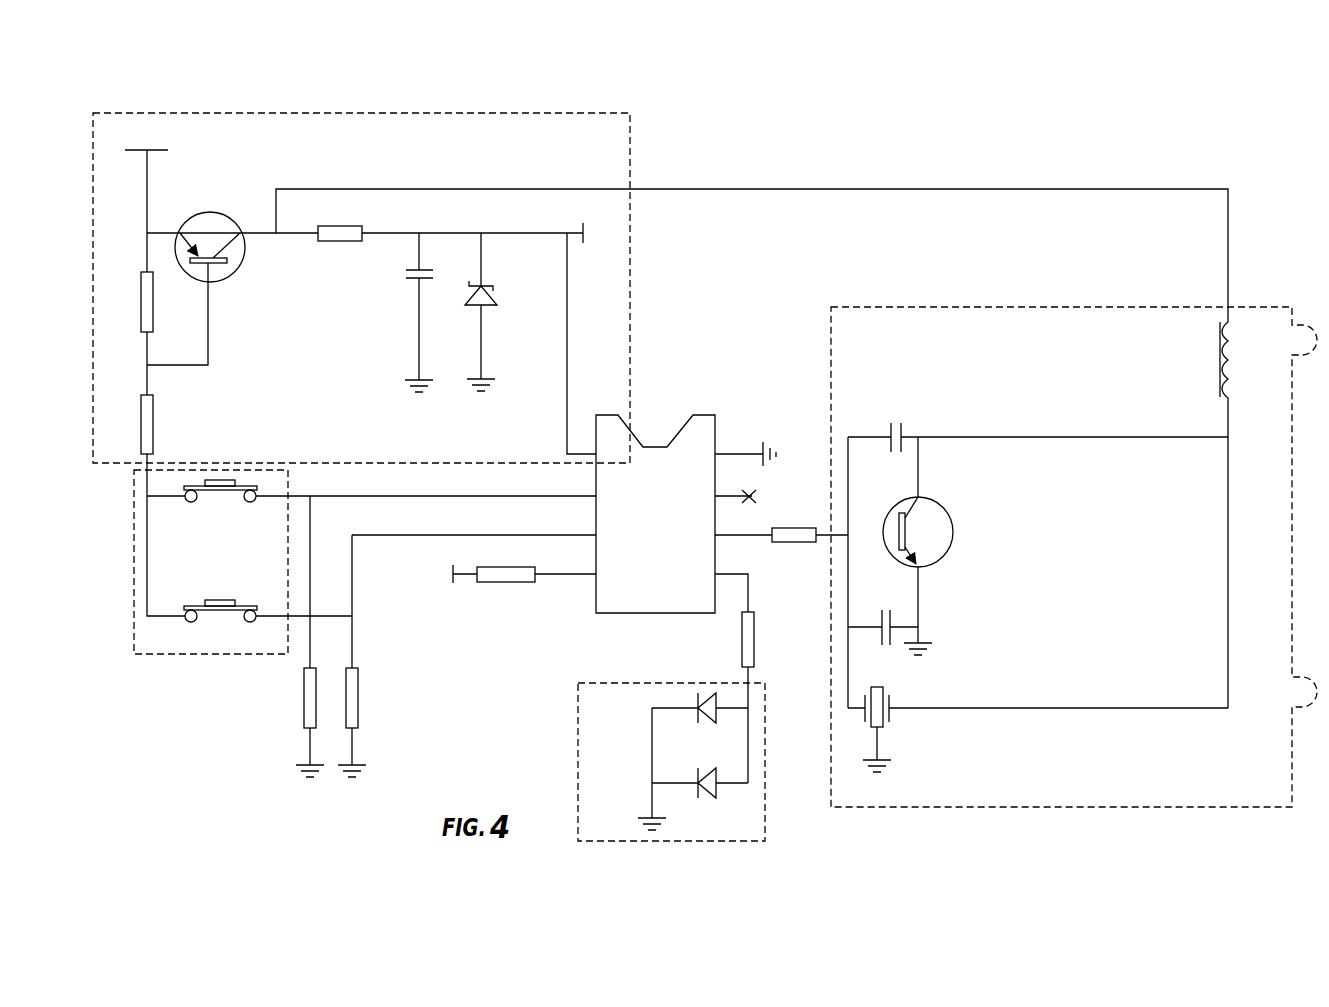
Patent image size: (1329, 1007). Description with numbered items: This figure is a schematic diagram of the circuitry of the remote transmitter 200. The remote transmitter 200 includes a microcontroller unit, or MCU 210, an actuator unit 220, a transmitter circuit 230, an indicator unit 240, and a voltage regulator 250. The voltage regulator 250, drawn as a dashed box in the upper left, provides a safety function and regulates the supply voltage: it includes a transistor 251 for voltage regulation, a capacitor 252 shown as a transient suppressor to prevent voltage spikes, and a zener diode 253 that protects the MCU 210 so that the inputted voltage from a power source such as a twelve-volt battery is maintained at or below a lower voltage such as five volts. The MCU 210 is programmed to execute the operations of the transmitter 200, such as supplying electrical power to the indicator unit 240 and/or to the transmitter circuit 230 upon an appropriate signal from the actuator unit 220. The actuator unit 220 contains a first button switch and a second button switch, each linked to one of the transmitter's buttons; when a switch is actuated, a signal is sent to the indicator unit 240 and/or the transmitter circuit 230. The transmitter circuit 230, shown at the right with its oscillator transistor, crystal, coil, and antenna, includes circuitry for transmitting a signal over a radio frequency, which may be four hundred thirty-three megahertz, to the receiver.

The remote transmitter 200 is at (756, 130).
The microcontroller unit (MCU) 210 is at (657, 390).
The actuator unit 220 is at (122, 573).
The transmitter circuit 230 is at (1003, 302).
The indicator unit 240 is at (611, 672).
The voltage regulator 250 is at (282, 112).
The transistor 251 is at (240, 286).
The filter capacitor 0.1uF 252 is at (393, 362).
The zener diode 253 is at (494, 364).